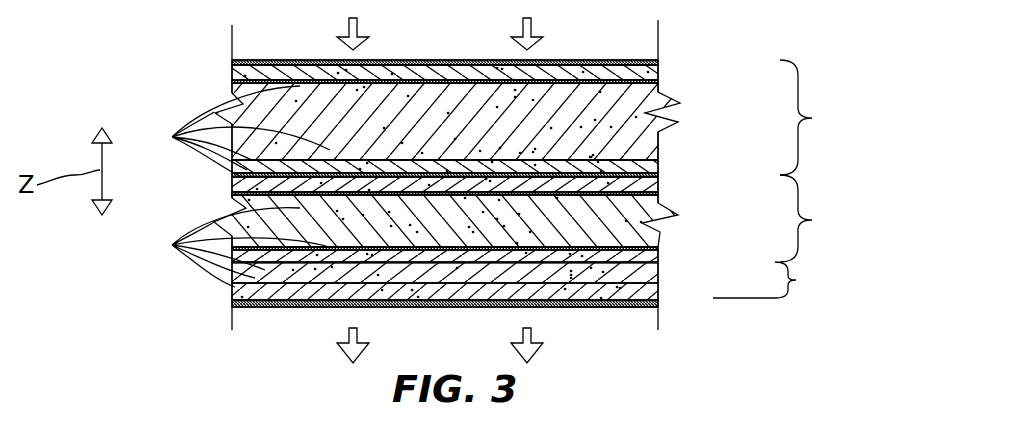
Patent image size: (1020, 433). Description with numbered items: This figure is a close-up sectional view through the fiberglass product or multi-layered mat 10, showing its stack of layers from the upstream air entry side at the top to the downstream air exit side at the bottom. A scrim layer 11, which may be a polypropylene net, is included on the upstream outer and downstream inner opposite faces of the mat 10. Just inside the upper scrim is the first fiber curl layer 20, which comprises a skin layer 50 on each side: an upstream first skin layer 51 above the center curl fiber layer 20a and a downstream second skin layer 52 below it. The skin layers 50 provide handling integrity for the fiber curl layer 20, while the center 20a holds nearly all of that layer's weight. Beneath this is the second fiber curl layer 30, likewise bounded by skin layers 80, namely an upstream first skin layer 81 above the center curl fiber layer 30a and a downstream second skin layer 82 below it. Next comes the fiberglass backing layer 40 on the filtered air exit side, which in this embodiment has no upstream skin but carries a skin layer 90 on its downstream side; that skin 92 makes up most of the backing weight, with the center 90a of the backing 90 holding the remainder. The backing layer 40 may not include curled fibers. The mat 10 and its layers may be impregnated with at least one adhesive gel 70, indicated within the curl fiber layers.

The fiberglass product 10 is at (837, 75).
The scrim layer 11 is at (580, 60).
The first fiber curl layer 20 is at (814, 117).
The center curl fiber layer 20a is at (660, 128).
The second fiber curl layer 30 is at (814, 218).
The center curl fiber layer 30a is at (615, 230).
The fiberglass backing layer 40 is at (771, 280).
The skin layer 50 is at (663, 68).
The first skin layer 51 is at (645, 73).
The second skin layer 52 is at (636, 159).
The adhesive gel 70 is at (239, 186).
The skin layer 80 is at (665, 175).
The first skin layer 81 is at (660, 183).
The second skin layer 82 is at (650, 272).
The skin layer 90 is at (667, 290).
The center of fiberglass backing 90a is at (657, 290).
The first skin layer 92 is at (637, 304).